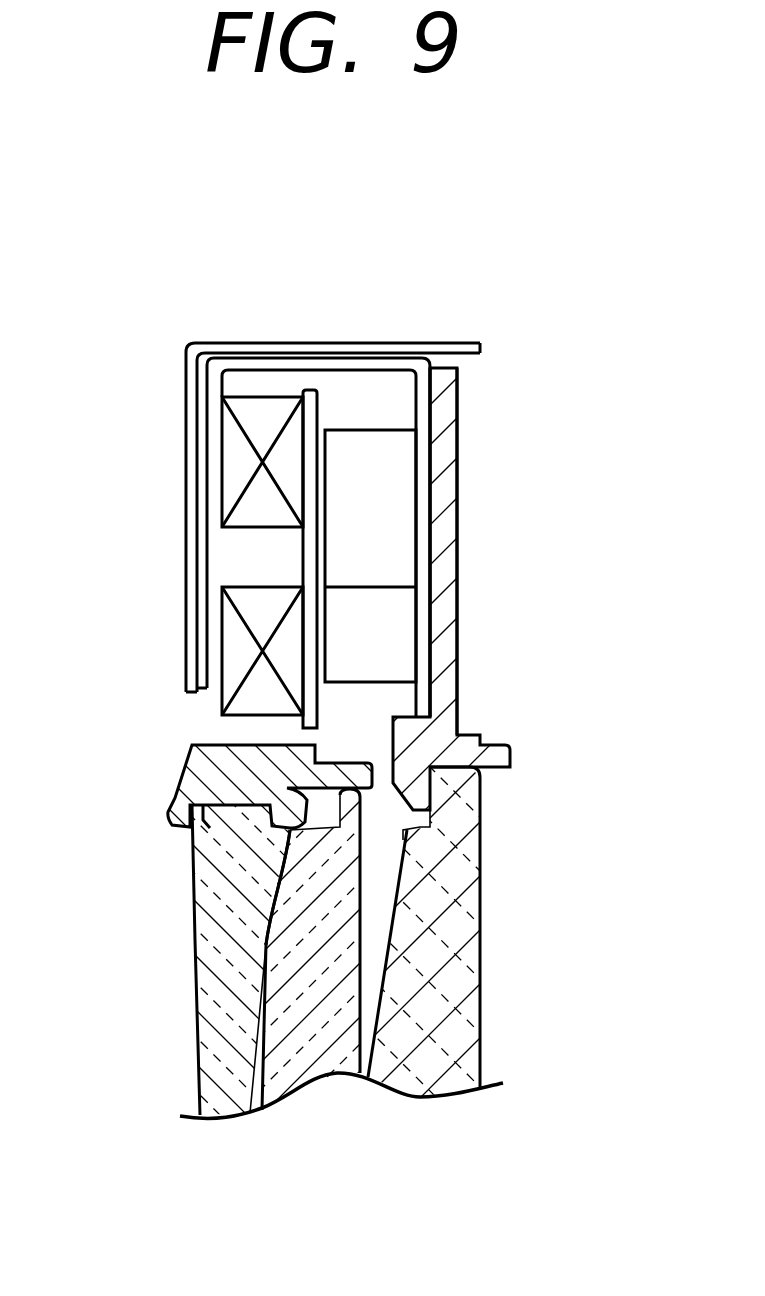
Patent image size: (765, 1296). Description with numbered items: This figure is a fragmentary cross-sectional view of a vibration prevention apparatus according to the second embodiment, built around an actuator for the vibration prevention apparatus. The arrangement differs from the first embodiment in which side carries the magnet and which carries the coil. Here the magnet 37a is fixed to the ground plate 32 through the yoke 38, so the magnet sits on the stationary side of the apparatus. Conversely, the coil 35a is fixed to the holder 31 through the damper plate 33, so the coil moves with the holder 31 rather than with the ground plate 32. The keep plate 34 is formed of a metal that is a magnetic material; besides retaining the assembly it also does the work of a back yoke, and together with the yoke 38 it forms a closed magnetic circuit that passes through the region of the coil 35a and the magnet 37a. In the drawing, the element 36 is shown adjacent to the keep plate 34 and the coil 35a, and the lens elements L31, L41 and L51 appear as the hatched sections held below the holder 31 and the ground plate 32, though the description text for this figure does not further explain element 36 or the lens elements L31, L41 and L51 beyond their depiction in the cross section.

The holder 31 is at (190, 763).
The ground plate 32 is at (491, 584).
The damper plate 33 is at (317, 407).
The keep plate 34 is at (187, 558).
The coil 35a is at (258, 400).
The inner yoke 36 is at (302, 345).
The magnet 37a is at (397, 463).
The yoke 38 is at (427, 400).
The lens L31 is at (210, 983).
The lens L41 is at (293, 1063).
The lens L51 is at (433, 1083).